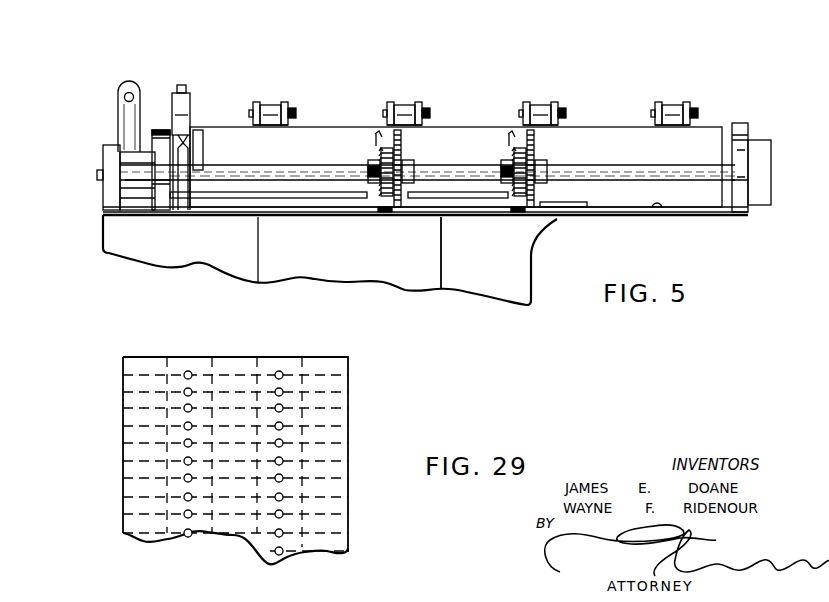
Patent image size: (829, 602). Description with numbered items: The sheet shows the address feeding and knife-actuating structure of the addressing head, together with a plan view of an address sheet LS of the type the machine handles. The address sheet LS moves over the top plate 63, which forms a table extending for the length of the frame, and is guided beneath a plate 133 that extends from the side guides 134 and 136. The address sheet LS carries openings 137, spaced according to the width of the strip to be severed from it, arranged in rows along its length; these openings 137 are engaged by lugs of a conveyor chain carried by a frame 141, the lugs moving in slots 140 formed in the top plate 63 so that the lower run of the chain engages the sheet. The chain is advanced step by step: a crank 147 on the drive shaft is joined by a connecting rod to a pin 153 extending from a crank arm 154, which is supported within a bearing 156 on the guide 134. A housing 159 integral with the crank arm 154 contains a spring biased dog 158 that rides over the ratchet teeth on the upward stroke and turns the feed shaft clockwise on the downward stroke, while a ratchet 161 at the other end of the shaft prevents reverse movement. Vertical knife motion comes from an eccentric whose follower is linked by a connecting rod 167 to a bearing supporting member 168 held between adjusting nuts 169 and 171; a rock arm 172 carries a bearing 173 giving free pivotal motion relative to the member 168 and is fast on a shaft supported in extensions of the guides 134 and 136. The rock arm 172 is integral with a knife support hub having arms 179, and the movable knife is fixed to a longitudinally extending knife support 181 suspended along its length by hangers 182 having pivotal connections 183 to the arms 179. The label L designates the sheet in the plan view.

In FIG. 5, the top plate 63 is at (662, 210).
In FIG. 5, the plate 133 is at (305, 194).
In FIG. 5, the side guide 134 is at (162, 203).
In FIG. 5, the side guide 136 is at (742, 122).
In FIG. 29, the openings 137 is at (188, 461).
In FIG. 5, the slots 140 is at (384, 216).
In FIG. 5, the frame 141 is at (428, 130).
In FIG. 5, the crank 147 is at (110, 193).
In FIG. 5, the pin 153 is at (96, 168).
In FIG. 5, the crank arm 154 is at (125, 174).
In FIG. 5, the bearing 156 is at (158, 128).
In FIG. 5, the spring biased dog 158 is at (129, 93).
In FIG. 5, the housing 159 is at (118, 116).
In FIG. 5, the ratchet 161 is at (758, 140).
In FIG. 5, the connecting rod 167 is at (203, 163).
In FIG. 5, the bearing supporting member 168 is at (190, 104).
In FIG. 5, the adjusting nut 169 is at (183, 100).
In FIG. 5, the adjusting nut 171 is at (199, 128).
In FIG. 5, the rock arm 172 is at (166, 128).
In FIG. 5, the bearing 173 is at (179, 128).
In FIG. 5, the arms 179 is at (397, 102).
In FIG. 5, the knife support 181 is at (329, 134).
In FIG. 5, the hangers 182 is at (285, 105).
In FIG. 5, the pivotal connection 183 is at (656, 102).
In FIG. 29, the line L is at (348, 382).
In FIG. 29, the address sheet LS is at (348, 444).